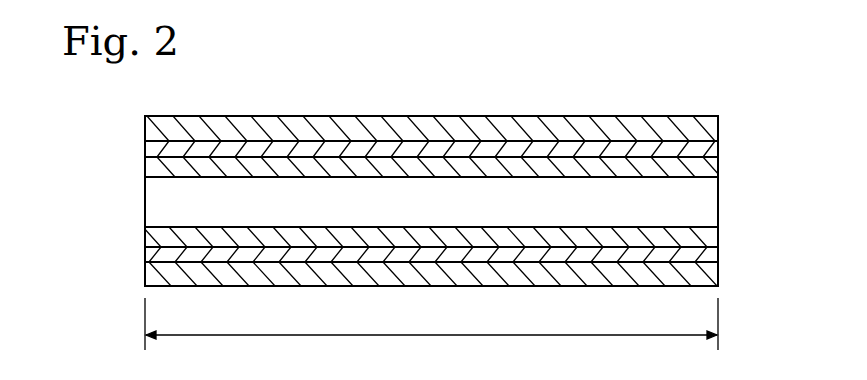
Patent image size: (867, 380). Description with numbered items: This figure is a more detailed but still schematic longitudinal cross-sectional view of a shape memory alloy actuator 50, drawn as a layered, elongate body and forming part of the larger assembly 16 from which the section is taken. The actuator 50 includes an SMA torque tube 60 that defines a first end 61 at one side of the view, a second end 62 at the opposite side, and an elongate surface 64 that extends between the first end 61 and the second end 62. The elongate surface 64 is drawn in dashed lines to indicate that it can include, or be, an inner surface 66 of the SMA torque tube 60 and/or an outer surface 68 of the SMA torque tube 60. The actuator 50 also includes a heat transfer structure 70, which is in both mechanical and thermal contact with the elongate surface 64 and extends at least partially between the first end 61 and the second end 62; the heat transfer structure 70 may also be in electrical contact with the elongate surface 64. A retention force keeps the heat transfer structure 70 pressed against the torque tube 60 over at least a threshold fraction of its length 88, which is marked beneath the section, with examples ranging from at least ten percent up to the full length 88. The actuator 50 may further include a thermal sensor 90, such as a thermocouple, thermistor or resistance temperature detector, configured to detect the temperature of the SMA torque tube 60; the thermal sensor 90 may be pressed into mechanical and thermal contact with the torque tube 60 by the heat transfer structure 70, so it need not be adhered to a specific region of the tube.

The composite structure 16 is at (686, 58).
The shape memory alloy actuator 50 is at (657, 92).
The SMA torque tube 60 is at (390, 107).
The first end 61 is at (136, 177).
The second end 62 is at (728, 205).
The elongate surface 64 is at (546, 132).
The inner surface 66 is at (224, 157).
The outer surface 68 is at (252, 156).
The heat transfer structure 70 is at (137, 270).
The length 88 is at (423, 336).
The thermal sensor 90 is at (498, 248).